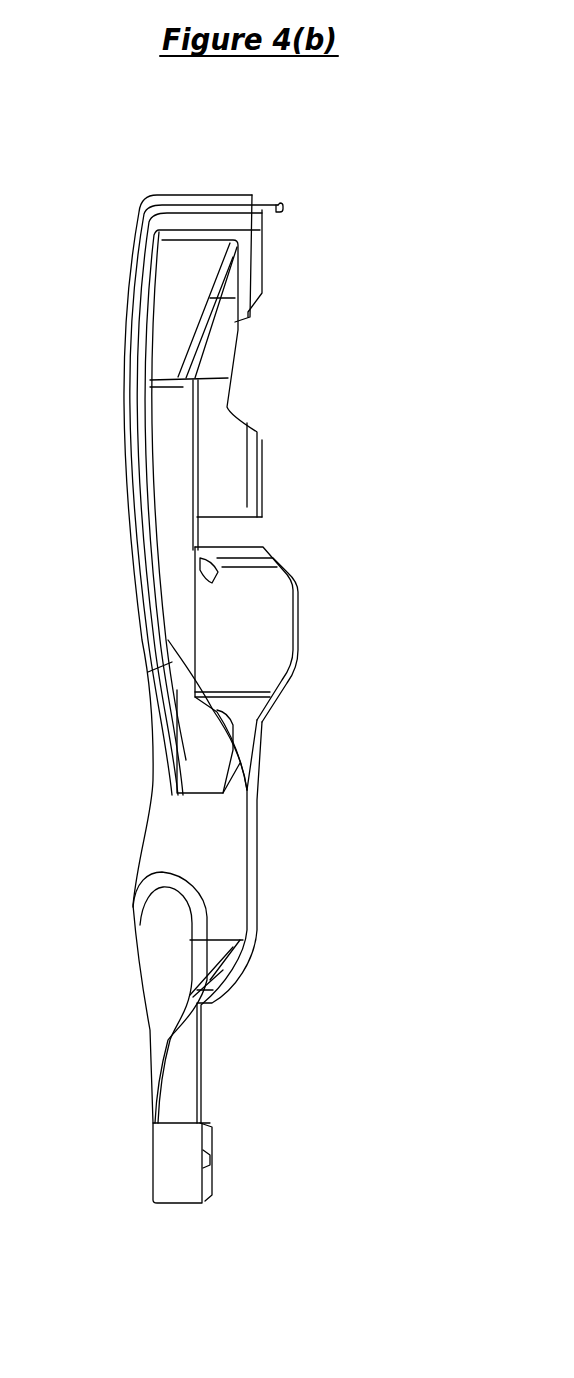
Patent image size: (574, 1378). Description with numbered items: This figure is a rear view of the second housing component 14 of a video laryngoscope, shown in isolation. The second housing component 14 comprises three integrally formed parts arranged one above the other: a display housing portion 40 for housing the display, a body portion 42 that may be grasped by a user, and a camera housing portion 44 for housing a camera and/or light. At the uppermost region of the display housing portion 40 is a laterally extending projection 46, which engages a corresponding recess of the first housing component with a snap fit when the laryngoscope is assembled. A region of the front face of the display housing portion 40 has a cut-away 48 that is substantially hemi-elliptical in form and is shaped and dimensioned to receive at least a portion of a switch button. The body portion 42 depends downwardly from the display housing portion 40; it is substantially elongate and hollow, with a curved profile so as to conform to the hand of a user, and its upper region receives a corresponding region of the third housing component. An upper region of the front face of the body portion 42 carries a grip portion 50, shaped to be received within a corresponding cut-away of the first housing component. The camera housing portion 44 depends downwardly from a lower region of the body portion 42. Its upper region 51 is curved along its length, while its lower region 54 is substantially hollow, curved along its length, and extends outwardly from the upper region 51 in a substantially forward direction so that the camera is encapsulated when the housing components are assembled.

The second housing component 14 is at (340, 247).
The display housing portion 40 is at (178, 310).
The body portion 42 is at (168, 737).
The camera housing portion 44 is at (168, 1143).
The laterally extending projection 46 is at (276, 206).
The cut-away 48 is at (228, 380).
The grip portion 50 is at (267, 627).
The upper region of the camera housing portion 51 is at (180, 1085).
The lower region of the camera housing portion 54 is at (178, 1182).